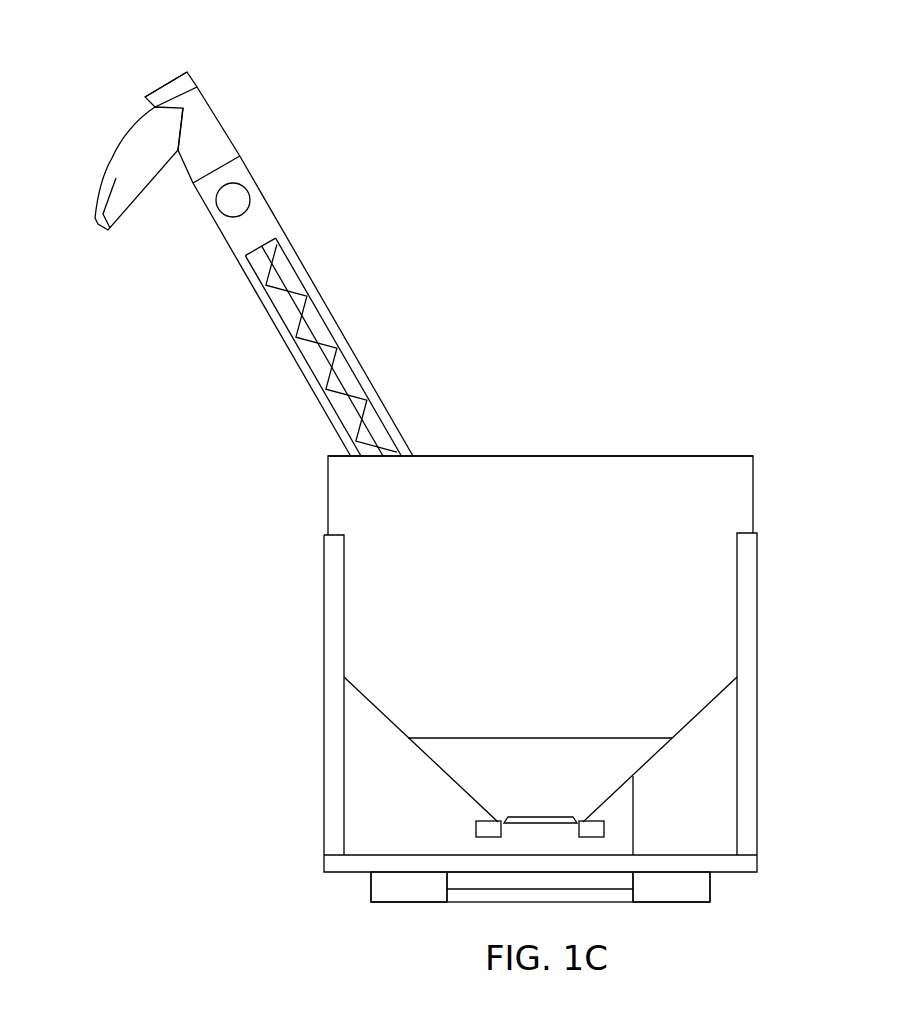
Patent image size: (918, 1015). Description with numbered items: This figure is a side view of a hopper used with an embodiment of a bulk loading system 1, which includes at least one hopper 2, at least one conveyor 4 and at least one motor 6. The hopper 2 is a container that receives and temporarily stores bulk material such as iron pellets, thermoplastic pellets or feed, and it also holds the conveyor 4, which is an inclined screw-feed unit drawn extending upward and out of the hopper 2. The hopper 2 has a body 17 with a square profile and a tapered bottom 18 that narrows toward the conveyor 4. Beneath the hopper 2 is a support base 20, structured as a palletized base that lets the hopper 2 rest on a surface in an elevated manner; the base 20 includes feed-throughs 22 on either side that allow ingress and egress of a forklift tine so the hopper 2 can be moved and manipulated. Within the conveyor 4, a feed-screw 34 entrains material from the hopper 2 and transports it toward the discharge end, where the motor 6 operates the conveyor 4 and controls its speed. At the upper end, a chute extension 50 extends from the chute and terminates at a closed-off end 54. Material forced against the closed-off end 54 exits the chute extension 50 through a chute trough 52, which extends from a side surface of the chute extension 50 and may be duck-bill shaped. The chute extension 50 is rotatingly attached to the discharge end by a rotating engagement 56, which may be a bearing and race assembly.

The system 1 is at (578, 157).
The hopper 2 is at (378, 574).
The conveyor 4 is at (350, 274).
The motor 6 is at (256, 181).
The body 17 is at (713, 503).
The tapered bottom 18 is at (632, 760).
The support base 20 is at (748, 893).
The feed-through 22 is at (400, 898).
The feed-screw 34 is at (300, 338).
The chute extension 50 is at (197, 87).
The chute trough 52 is at (107, 177).
The closed-off end 54 is at (173, 82).
The rotating engagement 56 is at (193, 182).